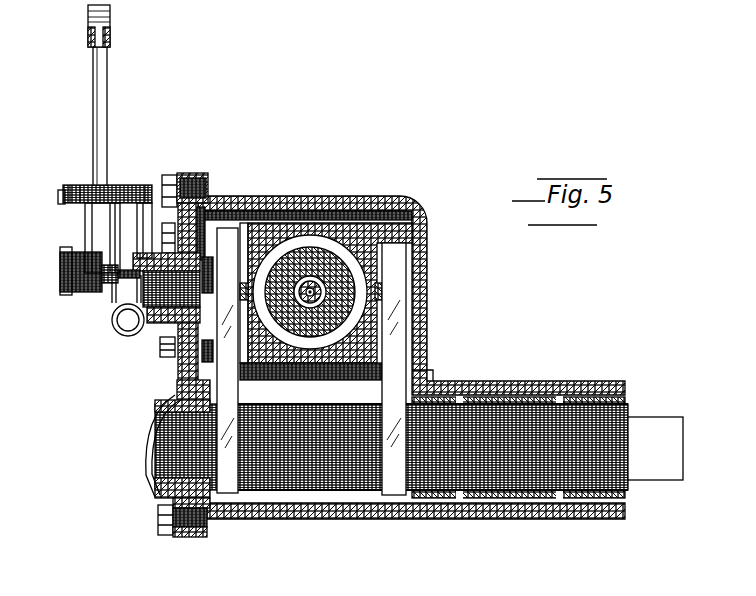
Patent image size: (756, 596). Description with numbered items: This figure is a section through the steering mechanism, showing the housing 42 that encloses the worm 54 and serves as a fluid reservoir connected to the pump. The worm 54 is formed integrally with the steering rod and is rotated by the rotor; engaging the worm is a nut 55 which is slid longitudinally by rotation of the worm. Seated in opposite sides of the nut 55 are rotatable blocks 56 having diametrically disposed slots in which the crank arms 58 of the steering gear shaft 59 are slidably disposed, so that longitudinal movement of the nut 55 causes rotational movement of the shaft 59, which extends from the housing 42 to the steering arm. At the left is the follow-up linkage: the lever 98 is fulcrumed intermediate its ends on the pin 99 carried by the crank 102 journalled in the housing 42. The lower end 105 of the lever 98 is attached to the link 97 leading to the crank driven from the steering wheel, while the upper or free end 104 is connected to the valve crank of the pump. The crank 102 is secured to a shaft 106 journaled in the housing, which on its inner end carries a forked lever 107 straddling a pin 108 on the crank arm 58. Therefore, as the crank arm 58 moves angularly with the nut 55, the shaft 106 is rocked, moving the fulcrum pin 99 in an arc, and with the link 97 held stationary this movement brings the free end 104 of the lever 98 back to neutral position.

The housing 42 is at (430, 334).
The worm 54 is at (343, 285).
The nut 55 is at (355, 233).
The rotatable blocks 56 is at (378, 261).
The crank arms 58 is at (229, 266).
The steering gear shaft 59 is at (515, 423).
The link 97 is at (58, 272).
The lever 98 is at (107, 147).
The pin 99 is at (58, 198).
The crank 102 is at (95, 234).
The free end of the lever 104 is at (110, 22).
The lower end of the lever 105 is at (78, 290).
The shaft 106 is at (177, 288).
The forked lever 107 is at (207, 362).
The pin 108 is at (177, 378).